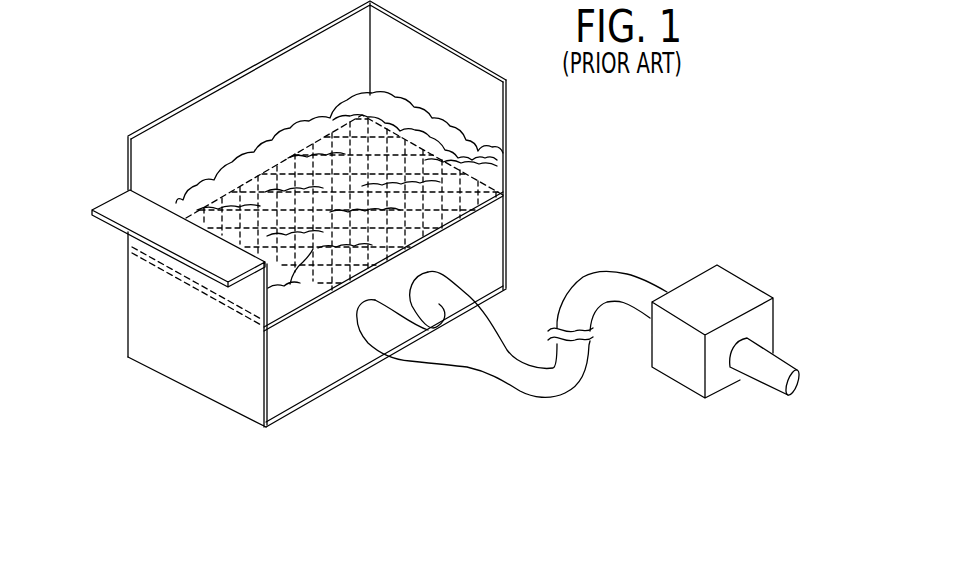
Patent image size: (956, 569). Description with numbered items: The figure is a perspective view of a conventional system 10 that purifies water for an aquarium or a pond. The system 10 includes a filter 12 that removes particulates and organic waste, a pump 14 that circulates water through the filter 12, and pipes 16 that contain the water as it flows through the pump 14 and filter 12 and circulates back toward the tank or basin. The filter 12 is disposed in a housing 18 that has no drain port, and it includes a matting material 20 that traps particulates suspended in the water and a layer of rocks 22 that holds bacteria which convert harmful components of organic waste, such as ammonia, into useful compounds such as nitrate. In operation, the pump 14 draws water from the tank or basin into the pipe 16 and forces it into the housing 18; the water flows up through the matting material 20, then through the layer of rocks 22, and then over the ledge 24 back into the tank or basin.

The system 10 is at (355, 436).
The filter 12 is at (540, 170).
The pump 14 is at (727, 277).
The pipes 16 is at (623, 278).
The housing 18 is at (507, 232).
The matting material 20 is at (448, 228).
The layer of rocks 22 is at (440, 128).
The ledge 24 is at (122, 195).